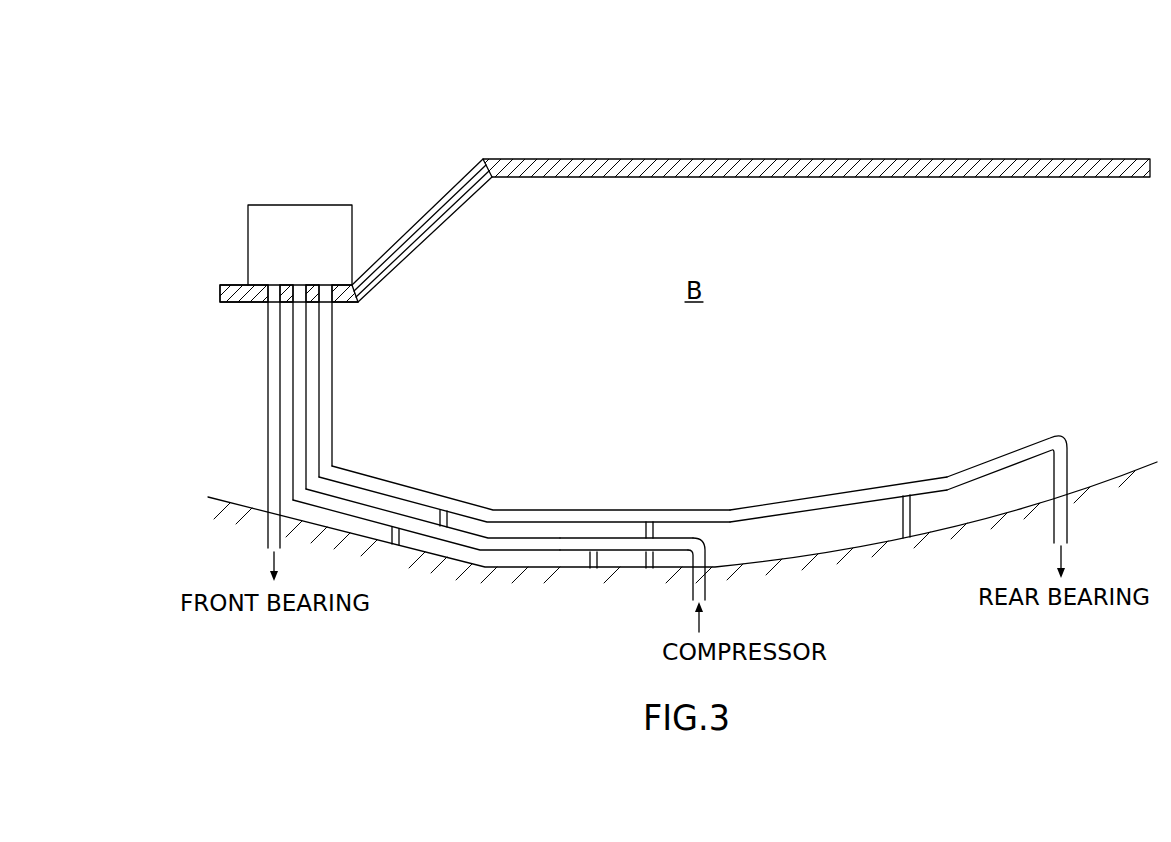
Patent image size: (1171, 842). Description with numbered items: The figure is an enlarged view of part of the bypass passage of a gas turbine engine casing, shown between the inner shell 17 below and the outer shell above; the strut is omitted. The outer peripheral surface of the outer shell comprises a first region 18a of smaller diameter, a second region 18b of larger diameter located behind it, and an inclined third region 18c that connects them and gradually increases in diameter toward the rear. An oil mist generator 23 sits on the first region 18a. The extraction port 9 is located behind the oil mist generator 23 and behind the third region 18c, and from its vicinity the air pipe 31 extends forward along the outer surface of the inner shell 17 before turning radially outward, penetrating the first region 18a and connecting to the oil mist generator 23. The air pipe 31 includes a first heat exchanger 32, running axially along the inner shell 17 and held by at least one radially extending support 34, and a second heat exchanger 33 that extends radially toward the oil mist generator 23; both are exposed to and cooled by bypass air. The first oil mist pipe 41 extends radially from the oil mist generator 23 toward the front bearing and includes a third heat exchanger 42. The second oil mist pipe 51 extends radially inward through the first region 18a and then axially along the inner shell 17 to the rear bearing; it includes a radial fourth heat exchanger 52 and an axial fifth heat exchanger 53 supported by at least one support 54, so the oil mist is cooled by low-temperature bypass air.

The extraction port 9 is at (713, 566).
The inner shell 17 is at (1118, 476).
The first region 18a is at (233, 283).
The second region 18b is at (763, 159).
The third region 18c is at (446, 195).
The oil mist generator 23 is at (298, 205).
The air pipe 31 is at (513, 560).
The first heat exchanger 32 is at (562, 538).
The second heat exchanger 33 is at (310, 360).
The support 34 is at (404, 546).
The first oil mist pipe 41 is at (260, 400).
The third heat exchanger 42 is at (230, 416).
The second oil mist pipe 51 is at (693, 458).
The fourth heat exchanger 52 is at (333, 407).
The fifth heat exchanger 53 is at (772, 503).
The support 54 is at (452, 510).